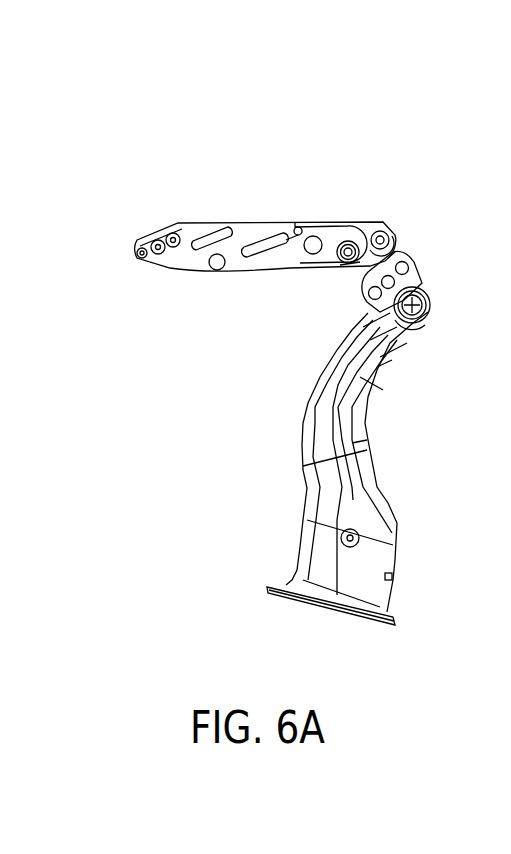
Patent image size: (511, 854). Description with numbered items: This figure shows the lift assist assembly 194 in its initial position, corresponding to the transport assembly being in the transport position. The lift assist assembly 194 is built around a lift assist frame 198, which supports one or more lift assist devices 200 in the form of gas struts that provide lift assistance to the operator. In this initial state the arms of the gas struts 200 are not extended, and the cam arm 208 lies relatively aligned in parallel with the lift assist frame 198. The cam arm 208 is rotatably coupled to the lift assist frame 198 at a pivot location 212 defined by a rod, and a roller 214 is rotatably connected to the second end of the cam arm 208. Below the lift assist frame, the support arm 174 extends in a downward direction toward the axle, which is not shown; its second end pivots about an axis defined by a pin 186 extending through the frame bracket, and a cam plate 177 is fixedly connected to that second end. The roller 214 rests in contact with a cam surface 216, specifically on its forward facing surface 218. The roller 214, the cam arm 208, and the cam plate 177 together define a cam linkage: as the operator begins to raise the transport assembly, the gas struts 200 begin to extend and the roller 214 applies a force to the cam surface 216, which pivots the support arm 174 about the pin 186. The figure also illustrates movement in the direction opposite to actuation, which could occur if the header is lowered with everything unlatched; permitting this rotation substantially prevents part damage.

The support arm 174 is at (370, 468).
The cam plate 177 is at (403, 233).
The pin 186 is at (433, 312).
The lift assist assembly 194 is at (208, 138).
The lift assist frame 198 is at (184, 262).
The lift assist device 200 is at (262, 238).
The cam arm 208 is at (343, 222).
The pivot location 212 is at (330, 258).
The roller 214 is at (394, 235).
The cam surface 216 is at (400, 247).
The forward facing surface 218 is at (352, 268).